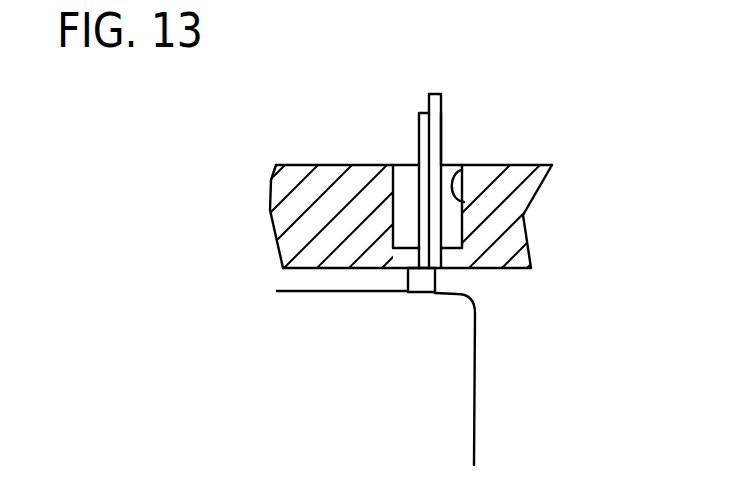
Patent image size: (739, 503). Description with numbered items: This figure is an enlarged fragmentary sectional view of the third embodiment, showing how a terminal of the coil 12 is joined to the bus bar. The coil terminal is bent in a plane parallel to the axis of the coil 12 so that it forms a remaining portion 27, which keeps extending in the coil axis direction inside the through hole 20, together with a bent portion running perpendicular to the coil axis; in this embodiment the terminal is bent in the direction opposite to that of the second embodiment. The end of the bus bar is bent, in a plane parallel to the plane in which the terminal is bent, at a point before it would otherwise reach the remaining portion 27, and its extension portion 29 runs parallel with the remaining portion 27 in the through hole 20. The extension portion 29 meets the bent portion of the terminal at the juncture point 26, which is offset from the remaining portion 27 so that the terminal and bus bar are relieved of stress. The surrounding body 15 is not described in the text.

The coil 12 is at (463, 373).
The mounting plate 15 is at (514, 209).
The through hole 20 is at (458, 170).
The juncture point 26 is at (428, 110).
The remaining portion 27 is at (419, 148).
The extension portion 29 is at (441, 147).